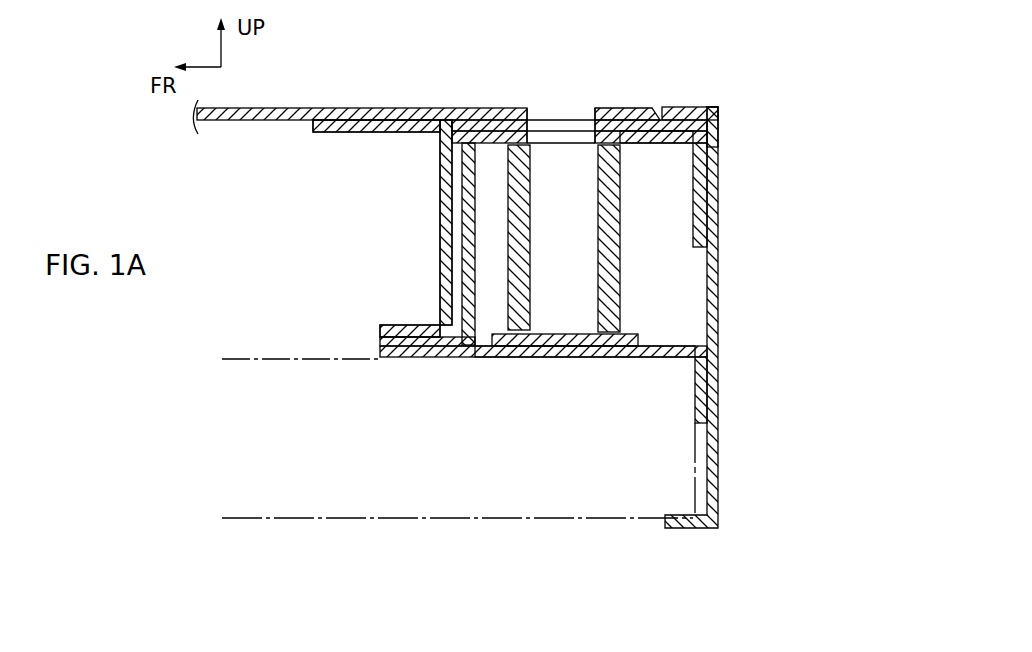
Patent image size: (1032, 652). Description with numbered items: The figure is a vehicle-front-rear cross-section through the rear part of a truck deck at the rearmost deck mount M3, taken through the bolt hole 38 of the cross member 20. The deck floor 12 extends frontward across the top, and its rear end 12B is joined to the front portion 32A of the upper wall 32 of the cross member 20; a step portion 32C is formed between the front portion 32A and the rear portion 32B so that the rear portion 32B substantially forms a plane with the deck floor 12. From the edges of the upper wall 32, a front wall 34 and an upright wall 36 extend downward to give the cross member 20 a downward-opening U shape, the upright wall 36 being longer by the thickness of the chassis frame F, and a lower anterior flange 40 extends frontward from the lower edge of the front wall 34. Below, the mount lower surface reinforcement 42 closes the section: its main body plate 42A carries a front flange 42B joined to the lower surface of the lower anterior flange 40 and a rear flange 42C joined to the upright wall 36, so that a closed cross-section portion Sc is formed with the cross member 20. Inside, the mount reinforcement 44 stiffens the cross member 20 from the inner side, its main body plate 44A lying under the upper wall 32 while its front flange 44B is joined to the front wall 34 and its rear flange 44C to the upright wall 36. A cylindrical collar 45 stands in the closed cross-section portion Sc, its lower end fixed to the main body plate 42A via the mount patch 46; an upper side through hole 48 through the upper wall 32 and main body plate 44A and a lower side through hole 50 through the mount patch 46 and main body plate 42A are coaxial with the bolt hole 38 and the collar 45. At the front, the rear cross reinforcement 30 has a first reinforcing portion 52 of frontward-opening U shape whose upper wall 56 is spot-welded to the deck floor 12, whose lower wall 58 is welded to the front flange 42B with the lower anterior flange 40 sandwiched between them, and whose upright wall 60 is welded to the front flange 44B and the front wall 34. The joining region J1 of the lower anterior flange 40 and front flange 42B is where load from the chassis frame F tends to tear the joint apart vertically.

The deck floor 12 is at (277, 108).
The rear end of the deck floor 12B is at (612, 107).
The cross member 20 is at (737, 317).
The rear cross reinforcement 30 is at (318, 126).
The upper wall 32 is at (707, 81).
The front portion of the upper wall 32A is at (663, 108).
The step portion 32C is at (675, 121).
The rear portion of the upper wall 32B is at (694, 108).
The front wall 34 is at (473, 223).
The upright wall 36 is at (720, 279).
The bolt hole 38 is at (537, 110).
The lower anterior flange 40 is at (380, 343).
The mount lower surface reinforcement 42 is at (538, 425).
The main body plate 42A is at (492, 357).
The front flange 42B is at (405, 357).
The rear flange 42C is at (695, 390).
The mount reinforcement 44 is at (589, 204).
The main body plate 44A is at (647, 143).
The front flange 44B is at (465, 175).
The rear flange 44C is at (700, 228).
The collar 45 is at (621, 283).
The mount patch 46 is at (633, 334).
The upper side through hole 48 is at (528, 127).
The lower side through hole 50 is at (542, 357).
The first reinforcing portion 52 is at (265, 195).
The upper wall 56 is at (313, 133).
The lower wall 58 is at (392, 325).
The upright wall 60 is at (447, 243).
The closed cross-section portion Sc is at (679, 260).
The joining region J1 is at (362, 347).
The chassis frame F is at (423, 510).
The deck mount M3 is at (583, 378).